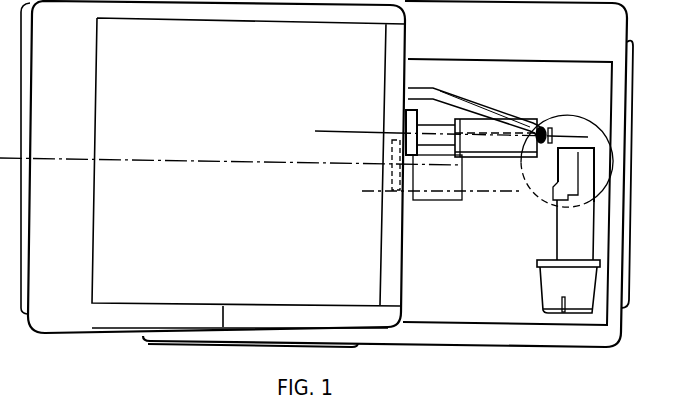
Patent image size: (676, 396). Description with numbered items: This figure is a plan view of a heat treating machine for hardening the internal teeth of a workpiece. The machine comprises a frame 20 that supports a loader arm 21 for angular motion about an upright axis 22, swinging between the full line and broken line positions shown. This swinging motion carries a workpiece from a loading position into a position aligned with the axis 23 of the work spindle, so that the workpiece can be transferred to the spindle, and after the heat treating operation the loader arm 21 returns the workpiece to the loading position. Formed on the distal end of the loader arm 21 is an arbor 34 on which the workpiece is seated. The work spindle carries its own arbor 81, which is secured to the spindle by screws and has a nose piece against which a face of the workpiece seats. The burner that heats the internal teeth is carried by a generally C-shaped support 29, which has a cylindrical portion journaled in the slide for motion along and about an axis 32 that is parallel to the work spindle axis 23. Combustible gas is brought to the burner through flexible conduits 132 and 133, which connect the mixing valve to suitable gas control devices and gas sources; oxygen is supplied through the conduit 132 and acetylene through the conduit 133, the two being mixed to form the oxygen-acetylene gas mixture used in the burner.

The frame 20 is at (356, 241).
The loader arm 21 is at (588, 229).
The upright axis 22 is at (572, 162).
The axis of work spindle 23 is at (313, 163).
The C-shaped support 29 is at (500, 127).
The axis 32 is at (340, 130).
The arbor 34 is at (582, 297).
The arbor 81 is at (365, 192).
The flexible conduit 132 is at (433, 88).
The flexible conduit 133 is at (471, 82).